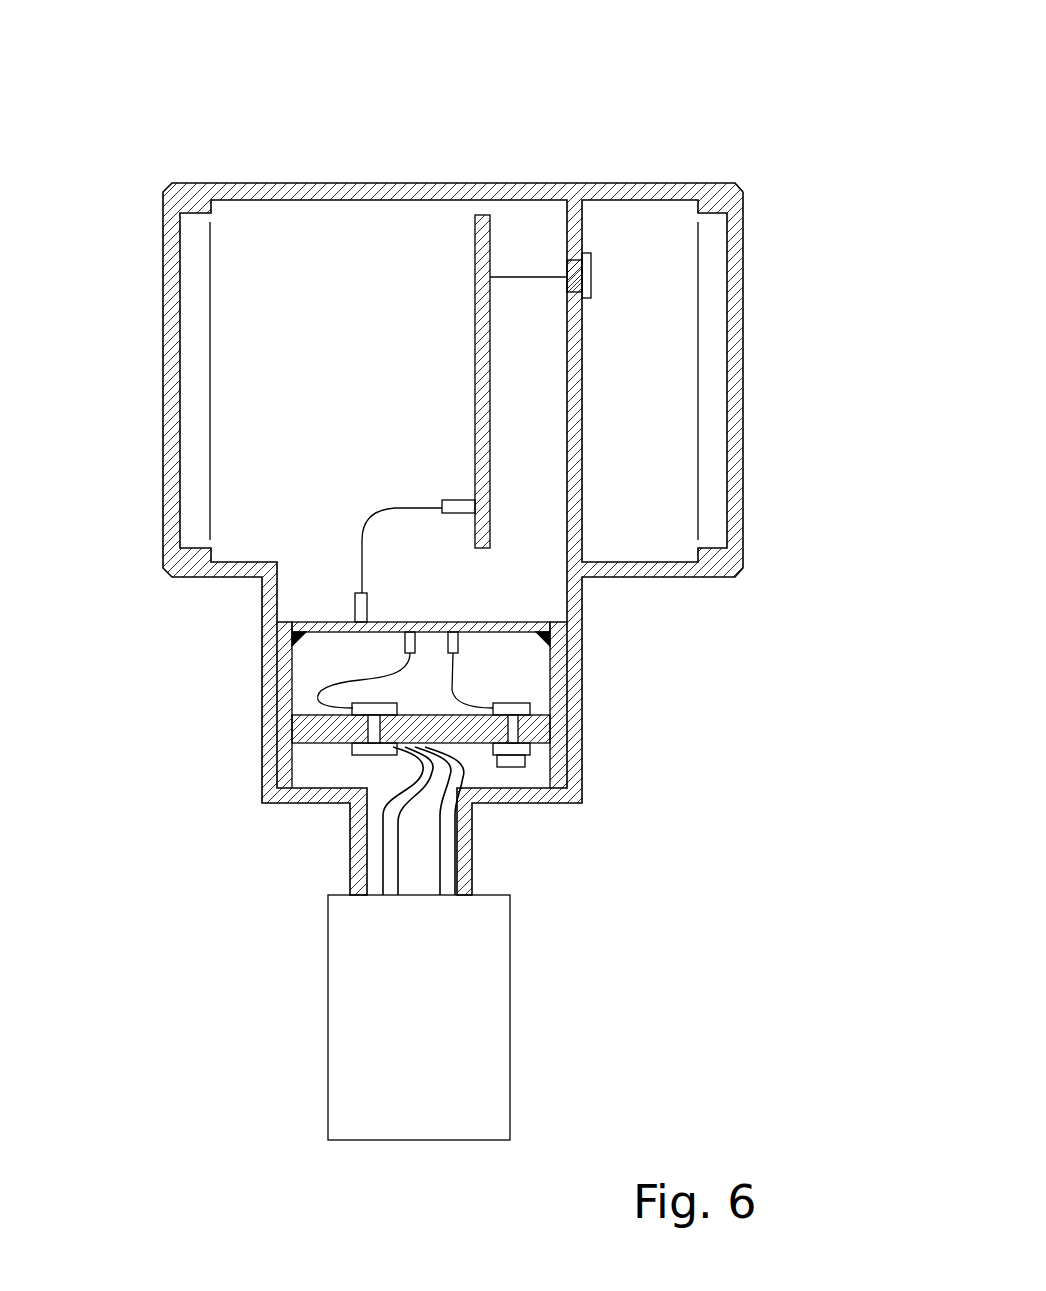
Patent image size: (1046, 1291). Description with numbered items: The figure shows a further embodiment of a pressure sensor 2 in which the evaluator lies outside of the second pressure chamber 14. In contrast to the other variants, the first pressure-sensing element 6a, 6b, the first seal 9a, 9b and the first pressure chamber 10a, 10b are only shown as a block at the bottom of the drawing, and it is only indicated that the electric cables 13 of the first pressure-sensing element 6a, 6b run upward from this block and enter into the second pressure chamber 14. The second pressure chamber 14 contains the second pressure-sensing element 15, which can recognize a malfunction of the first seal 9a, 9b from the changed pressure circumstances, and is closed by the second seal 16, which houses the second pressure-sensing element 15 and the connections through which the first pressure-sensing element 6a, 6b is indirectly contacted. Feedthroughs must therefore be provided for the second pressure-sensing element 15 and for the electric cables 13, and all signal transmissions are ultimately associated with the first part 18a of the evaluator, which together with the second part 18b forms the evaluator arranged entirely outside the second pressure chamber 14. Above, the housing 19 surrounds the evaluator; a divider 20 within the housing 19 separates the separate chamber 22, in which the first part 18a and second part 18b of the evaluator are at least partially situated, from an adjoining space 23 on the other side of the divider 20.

The pressure sensor 2 is at (185, 965).
The electric cables 13 is at (393, 862).
The second pressure chamber 14 is at (308, 776).
The second pressure-sensing element 15 is at (517, 760).
The second seal 16 is at (350, 740).
The first part of the evaluator 18a is at (320, 618).
The second part of the evaluator 18b is at (472, 312).
The housing 19 is at (640, 575).
The divider 20 is at (576, 232).
The separate chamber 22 is at (302, 259).
The adjoining space 23 is at (672, 350).
The first pressure-sensing element 6a is at (419, 1017).
The first pressure-sensing element 6b is at (419, 1017).
The first seal 9a is at (419, 1017).
The first seal 9b is at (419, 1017).
The first pressure chamber 10a is at (419, 1017).
The first pressure chamber 10b is at (419, 1017).